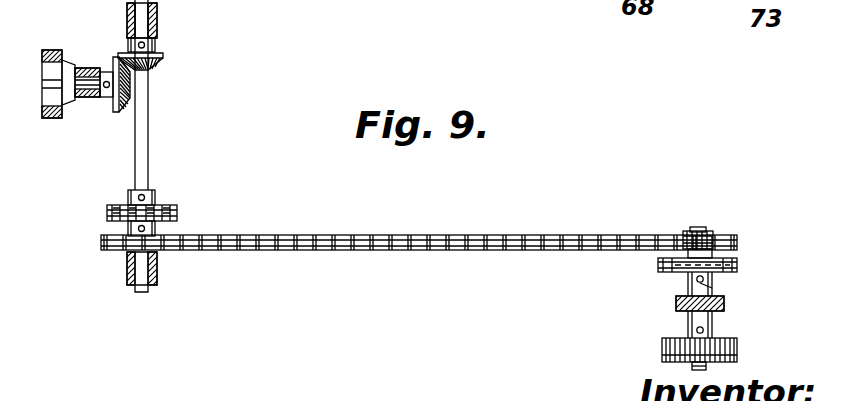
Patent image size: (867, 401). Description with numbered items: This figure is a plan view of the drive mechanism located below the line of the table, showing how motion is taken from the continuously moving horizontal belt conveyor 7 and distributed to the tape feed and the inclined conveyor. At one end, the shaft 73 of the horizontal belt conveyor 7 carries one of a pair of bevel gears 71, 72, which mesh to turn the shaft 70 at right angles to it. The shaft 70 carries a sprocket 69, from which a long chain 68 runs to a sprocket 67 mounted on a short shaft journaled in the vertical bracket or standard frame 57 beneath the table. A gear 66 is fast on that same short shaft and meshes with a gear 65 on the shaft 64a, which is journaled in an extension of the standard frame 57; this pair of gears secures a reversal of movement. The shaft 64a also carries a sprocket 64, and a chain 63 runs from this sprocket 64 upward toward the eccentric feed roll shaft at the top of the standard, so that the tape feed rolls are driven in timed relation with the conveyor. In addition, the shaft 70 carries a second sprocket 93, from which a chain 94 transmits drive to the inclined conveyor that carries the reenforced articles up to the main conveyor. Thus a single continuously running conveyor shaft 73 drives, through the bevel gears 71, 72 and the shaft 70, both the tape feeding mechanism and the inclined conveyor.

The transverse horizontal conveyor 7 is at (46, 52).
The vertical bracket or standard frame 57 is at (676, 304).
The chain 63 is at (737, 262).
The sprocket 64 is at (703, 279).
The shaft 64a is at (712, 282).
The gear 65 is at (722, 352).
The gear 66 is at (662, 360).
The sprocket 67 is at (717, 231).
The chain 68 is at (430, 251).
The sprocket 69 is at (122, 250).
The shaft 70 is at (148, 130).
The bevel gear 71 is at (165, 63).
The bevel gear 72 is at (130, 110).
The shaft of the horizontal belt conveyor 73 is at (88, 84).
The sprocket 93 is at (160, 205).
The chain 94 is at (178, 208).